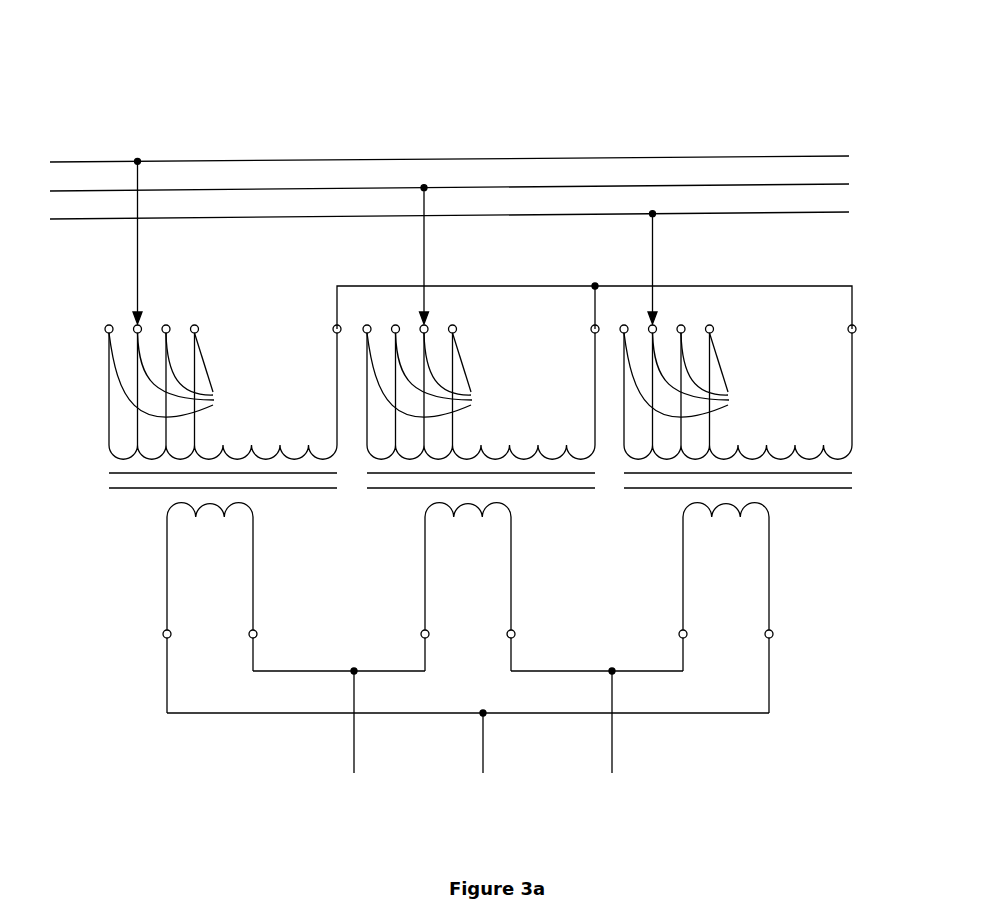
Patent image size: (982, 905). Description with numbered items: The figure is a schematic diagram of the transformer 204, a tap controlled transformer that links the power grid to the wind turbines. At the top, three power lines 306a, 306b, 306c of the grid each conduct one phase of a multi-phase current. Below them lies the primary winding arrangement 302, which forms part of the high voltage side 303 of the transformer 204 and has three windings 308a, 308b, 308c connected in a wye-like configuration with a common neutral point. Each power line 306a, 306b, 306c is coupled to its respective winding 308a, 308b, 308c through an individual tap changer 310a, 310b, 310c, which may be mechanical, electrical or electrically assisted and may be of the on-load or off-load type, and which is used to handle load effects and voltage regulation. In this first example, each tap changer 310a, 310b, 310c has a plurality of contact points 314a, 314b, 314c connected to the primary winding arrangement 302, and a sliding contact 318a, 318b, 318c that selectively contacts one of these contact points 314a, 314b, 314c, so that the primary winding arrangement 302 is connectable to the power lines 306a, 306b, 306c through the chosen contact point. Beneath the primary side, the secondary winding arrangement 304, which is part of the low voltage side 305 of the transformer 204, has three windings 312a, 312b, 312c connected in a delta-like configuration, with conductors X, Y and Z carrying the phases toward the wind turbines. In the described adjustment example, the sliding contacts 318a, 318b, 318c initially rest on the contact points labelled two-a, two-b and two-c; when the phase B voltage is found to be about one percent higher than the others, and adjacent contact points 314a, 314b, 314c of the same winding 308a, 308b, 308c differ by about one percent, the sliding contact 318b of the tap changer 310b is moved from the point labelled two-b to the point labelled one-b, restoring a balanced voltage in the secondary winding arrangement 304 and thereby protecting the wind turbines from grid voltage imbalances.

The transformer 204 is at (760, 65).
The primary winding arrangement 302 is at (83, 451).
The high voltage side 303 is at (72, 409).
The secondary winding arrangement 304 is at (145, 587).
The low voltage side 305 is at (82, 575).
The power line 306a is at (243, 160).
The power line 306b is at (337, 187).
The power line 306c is at (463, 215).
The winding 308a is at (299, 418).
The winding 308b is at (548, 420).
The winding 308c is at (803, 415).
The tap changer 310a is at (236, 324).
The tap changer 310b is at (492, 346).
The tap changer 310c is at (748, 334).
The winding 312a is at (180, 608).
The winding 312b is at (467, 554).
The winding 312c is at (724, 550).
The contact points 314a is at (184, 375).
The contact points 314b is at (442, 375).
The contact points 314c is at (700, 375).
The sliding contact 318a is at (148, 311).
The sliding contact 318b is at (434, 309).
The sliding contact 318c is at (664, 307).